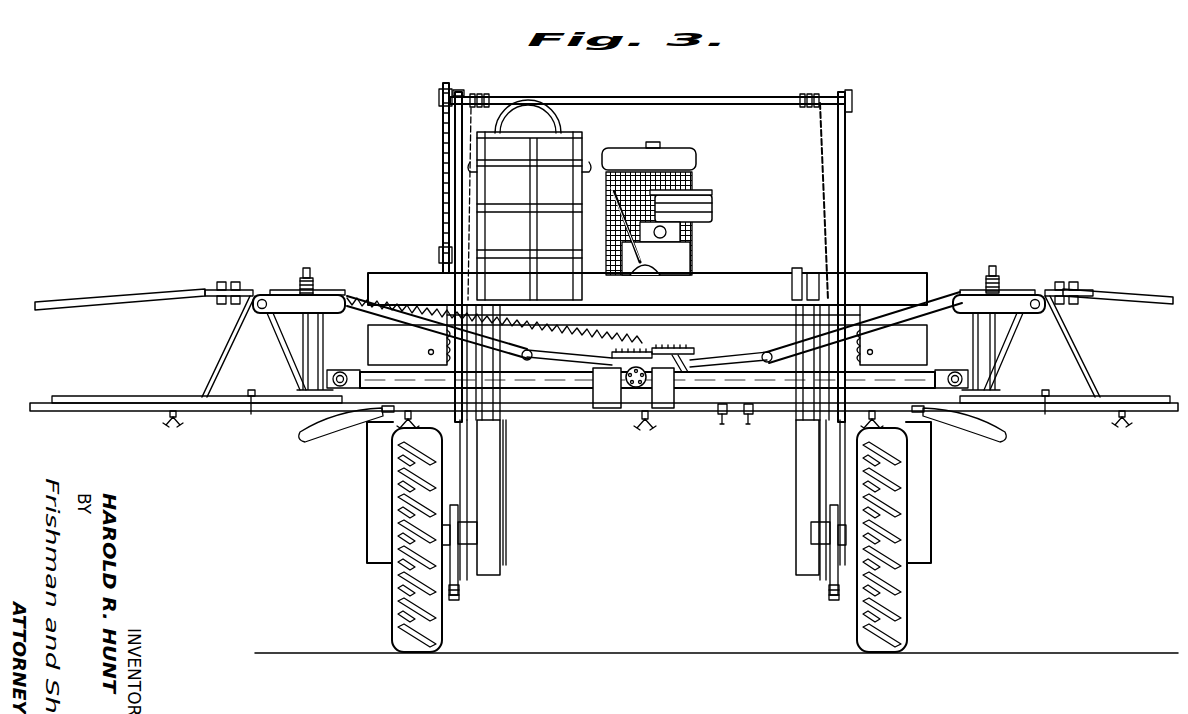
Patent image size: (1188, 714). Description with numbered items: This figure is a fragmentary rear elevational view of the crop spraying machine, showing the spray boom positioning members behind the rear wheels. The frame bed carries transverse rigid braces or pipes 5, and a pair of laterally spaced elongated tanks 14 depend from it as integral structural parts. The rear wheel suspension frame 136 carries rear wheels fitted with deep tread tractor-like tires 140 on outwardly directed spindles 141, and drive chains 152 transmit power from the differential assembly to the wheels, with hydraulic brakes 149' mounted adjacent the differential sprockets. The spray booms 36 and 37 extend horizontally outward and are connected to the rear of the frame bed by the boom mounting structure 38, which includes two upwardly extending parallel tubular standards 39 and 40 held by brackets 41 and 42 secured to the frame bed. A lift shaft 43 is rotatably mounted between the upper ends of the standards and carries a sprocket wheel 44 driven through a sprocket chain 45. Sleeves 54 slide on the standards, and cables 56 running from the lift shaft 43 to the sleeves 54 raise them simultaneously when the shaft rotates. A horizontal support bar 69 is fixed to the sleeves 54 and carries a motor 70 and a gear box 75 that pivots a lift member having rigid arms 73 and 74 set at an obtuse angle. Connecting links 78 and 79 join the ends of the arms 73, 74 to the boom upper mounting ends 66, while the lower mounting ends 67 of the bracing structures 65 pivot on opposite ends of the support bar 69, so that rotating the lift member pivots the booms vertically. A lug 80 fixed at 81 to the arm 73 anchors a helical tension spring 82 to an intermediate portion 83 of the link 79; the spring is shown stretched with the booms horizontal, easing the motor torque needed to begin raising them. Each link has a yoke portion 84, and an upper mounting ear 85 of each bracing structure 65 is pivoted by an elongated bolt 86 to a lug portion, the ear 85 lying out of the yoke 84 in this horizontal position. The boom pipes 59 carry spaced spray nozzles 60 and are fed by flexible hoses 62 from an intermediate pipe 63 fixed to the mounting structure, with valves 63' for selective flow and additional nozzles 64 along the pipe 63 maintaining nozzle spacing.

The transversely extending rigid braces or pipes 5 is at (563, 310).
The elongated tanks 14 is at (367, 517).
The spray boom 36 is at (1120, 290).
The spray boom 37 is at (58, 290).
The boom mounting structure 38 is at (521, 415).
The tubular standard 39 is at (462, 100).
The tubular standard 40 is at (846, 150).
The bracket 41 is at (430, 352).
The bracket 42 is at (870, 352).
The lift shaft 43 is at (713, 100).
The sprocket wheel 44 is at (440, 88).
The sprocket chain 45 is at (440, 182).
The vertically extending sleeves 54 is at (455, 365).
The cables 56 is at (822, 150).
The pipes 59 is at (213, 406).
The spray nozzles 60 is at (1122, 424).
The flexible hoses 62 is at (336, 430).
The intermediate pipe 63 is at (768, 429).
The valves 63' is at (731, 428).
The spray nozzles 64 is at (402, 428).
The bracing structure 65 is at (214, 350).
The upper mounting end 66 is at (262, 300).
The lower mounting end 67 is at (341, 372).
The horizontal support bar 69 is at (512, 379).
The motor 70 is at (612, 405).
The rigid arm 73 is at (750, 378).
The rigid arm 74 is at (562, 366).
The gear box 75 is at (667, 402).
The connecting link 78 is at (940, 298).
The connecting link 79 is at (343, 296).
The lug 80 is at (703, 362).
The lug fixing point 81 is at (760, 362).
The helical tension spring 82 is at (520, 318).
The intermediate portion of connecting link 83 is at (327, 298).
The yoke portion 84 is at (303, 270).
The upper mounting ear 85 is at (295, 298).
The elongated bolt 86 is at (312, 332).
The rear wheel suspension frame 136 is at (498, 500).
The tires 140 is at (397, 652).
The spindles 141 is at (451, 592).
The hydraulic brakes 149' is at (794, 268).
The drive chains 152 is at (457, 602).